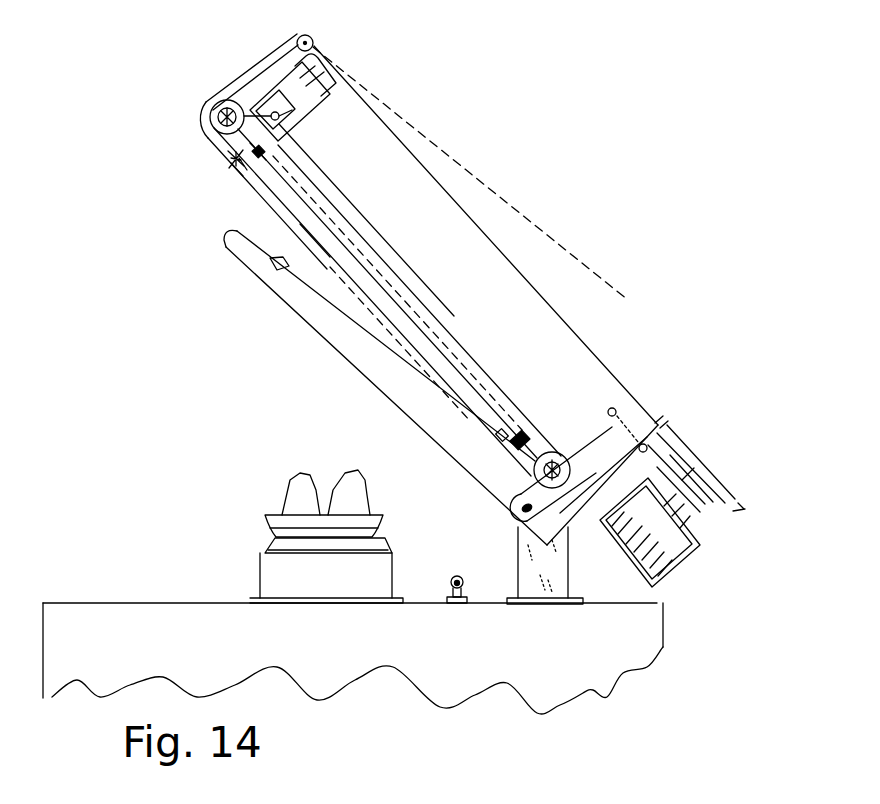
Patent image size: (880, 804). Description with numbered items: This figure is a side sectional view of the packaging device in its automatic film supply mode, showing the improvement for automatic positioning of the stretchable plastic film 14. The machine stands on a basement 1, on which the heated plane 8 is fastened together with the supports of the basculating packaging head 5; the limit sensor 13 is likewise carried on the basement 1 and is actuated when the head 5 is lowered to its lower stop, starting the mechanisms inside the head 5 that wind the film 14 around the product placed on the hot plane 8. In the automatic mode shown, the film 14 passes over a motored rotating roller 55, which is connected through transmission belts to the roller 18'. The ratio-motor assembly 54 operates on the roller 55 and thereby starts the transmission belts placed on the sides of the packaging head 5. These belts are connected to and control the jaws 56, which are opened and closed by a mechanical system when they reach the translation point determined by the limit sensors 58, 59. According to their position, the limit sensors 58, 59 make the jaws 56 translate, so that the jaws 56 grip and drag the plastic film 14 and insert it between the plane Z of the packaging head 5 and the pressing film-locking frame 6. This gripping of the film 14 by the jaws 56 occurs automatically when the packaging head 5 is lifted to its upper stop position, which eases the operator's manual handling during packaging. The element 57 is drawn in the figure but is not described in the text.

The basement 1 is at (582, 662).
The basculating packaging head 5 is at (630, 418).
The film-locking frame 6 is at (322, 323).
The heated plane 8 is at (282, 576).
The limit sensor 13 is at (457, 593).
The stretchable plastic film 14 is at (448, 150).
The roller 18' is at (610, 414).
The ratio-motor assembly 54 is at (270, 108).
The motored rotating roller 55 is at (216, 112).
The jaws 56 is at (231, 162).
The guide rail 57 is at (480, 365).
The limit sensor 58 is at (258, 152).
The limit sensor 59 is at (536, 420).
The basculating head plane Z is at (313, 240).